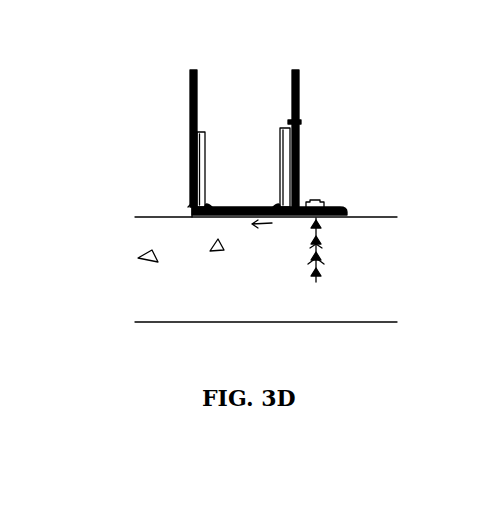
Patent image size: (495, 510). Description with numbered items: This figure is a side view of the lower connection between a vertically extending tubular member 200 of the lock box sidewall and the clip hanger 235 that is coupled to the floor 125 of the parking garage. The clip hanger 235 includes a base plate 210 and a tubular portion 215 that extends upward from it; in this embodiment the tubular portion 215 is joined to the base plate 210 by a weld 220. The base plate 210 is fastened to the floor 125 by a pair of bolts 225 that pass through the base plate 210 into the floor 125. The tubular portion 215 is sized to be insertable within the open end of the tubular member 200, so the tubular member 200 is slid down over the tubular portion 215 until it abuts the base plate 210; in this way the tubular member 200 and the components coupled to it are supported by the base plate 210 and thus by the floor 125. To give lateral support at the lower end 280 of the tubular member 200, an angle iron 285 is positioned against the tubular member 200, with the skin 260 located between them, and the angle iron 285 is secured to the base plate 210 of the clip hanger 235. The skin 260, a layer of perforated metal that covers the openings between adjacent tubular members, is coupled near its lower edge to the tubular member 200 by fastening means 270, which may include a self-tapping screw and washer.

The floor 125 is at (284, 314).
The tubular member 200 is at (188, 102).
The base plate 210 is at (345, 208).
The tubular portion 215 is at (204, 152).
The weld 220 is at (208, 205).
The bolts 225 is at (323, 247).
The clip hanger 235 is at (215, 102).
The skin 260 is at (303, 100).
The fastening means 270 is at (306, 122).
The lower end 280 is at (190, 204).
The angle iron 285 is at (300, 182).